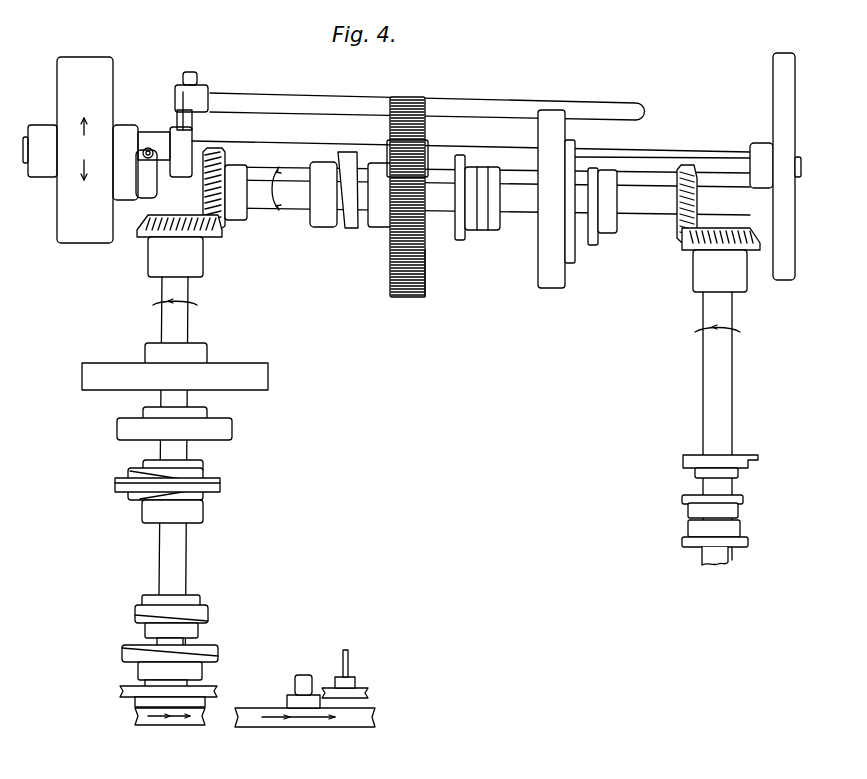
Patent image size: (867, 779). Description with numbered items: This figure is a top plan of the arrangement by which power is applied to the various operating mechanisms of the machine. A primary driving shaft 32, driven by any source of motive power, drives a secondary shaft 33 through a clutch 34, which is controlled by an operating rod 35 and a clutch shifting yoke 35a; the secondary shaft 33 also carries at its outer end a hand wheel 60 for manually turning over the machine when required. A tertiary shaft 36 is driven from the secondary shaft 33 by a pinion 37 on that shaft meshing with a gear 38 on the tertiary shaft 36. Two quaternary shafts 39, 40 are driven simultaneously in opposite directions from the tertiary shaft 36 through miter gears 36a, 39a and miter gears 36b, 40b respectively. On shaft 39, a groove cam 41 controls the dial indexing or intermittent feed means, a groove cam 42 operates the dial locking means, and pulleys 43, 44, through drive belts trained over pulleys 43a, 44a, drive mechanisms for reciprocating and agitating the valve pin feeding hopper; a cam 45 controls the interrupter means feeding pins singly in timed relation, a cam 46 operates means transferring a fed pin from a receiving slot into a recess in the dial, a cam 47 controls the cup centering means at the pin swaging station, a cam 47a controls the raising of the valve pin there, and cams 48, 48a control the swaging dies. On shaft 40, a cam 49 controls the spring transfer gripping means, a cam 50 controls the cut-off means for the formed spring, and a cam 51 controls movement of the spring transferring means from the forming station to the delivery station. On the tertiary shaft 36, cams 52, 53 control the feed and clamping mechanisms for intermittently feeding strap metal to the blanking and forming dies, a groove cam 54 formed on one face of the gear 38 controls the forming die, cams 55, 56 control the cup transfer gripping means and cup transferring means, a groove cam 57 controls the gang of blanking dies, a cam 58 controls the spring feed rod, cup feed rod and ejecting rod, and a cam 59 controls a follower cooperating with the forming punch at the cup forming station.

The primary driving shaft 32 is at (38, 165).
The secondary shaft 33 is at (283, 148).
The clutch 34 is at (140, 142).
The operating rod 35 is at (362, 98).
The clutch shifting yoke 35a is at (184, 122).
The tertiary shaft 36 is at (513, 210).
The miter gear 36a is at (222, 214).
The miter gear 36b is at (680, 222).
The pinion 37 is at (428, 152).
The gear 38 is at (406, 298).
The quaternary shaft 39 is at (190, 302).
The miter gear 39a is at (215, 237).
The quaternary shaft 40 is at (703, 375).
The miter gear 40b is at (697, 250).
The groove cam 41 is at (113, 356).
The groove cam 42 is at (117, 426).
The pulley 43 is at (135, 715).
The pulley 43a is at (248, 722).
The pulley 44 is at (122, 690).
The pulley 44a is at (370, 693).
The cam 45 is at (135, 617).
The cam 46 is at (122, 652).
The cam 47 is at (115, 482).
The cam 47a is at (130, 486).
The cam 48 is at (183, 470).
The cam 48a is at (175, 495).
The cam 49 is at (682, 541).
The cam 50 is at (682, 499).
The cam 51 is at (684, 460).
The cam 52 is at (334, 220).
The cam 53 is at (351, 230).
The groove cam 54 is at (426, 268).
The cam 55 is at (460, 240).
The cam 56 is at (482, 232).
The groove cam 57 is at (537, 272).
The cam 58 is at (569, 266).
The cam 59 is at (594, 246).
The hand wheel 60 is at (774, 84).